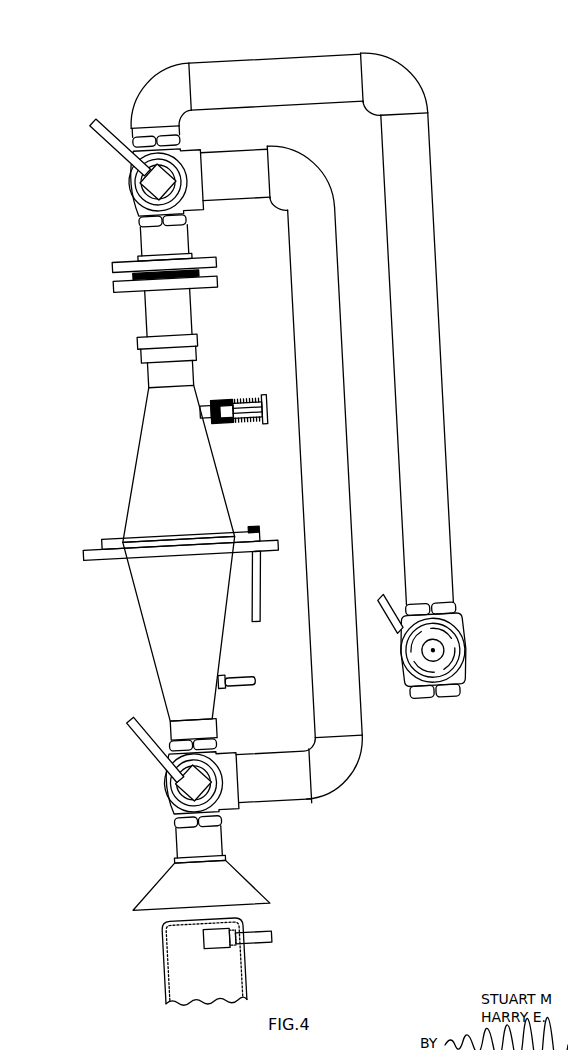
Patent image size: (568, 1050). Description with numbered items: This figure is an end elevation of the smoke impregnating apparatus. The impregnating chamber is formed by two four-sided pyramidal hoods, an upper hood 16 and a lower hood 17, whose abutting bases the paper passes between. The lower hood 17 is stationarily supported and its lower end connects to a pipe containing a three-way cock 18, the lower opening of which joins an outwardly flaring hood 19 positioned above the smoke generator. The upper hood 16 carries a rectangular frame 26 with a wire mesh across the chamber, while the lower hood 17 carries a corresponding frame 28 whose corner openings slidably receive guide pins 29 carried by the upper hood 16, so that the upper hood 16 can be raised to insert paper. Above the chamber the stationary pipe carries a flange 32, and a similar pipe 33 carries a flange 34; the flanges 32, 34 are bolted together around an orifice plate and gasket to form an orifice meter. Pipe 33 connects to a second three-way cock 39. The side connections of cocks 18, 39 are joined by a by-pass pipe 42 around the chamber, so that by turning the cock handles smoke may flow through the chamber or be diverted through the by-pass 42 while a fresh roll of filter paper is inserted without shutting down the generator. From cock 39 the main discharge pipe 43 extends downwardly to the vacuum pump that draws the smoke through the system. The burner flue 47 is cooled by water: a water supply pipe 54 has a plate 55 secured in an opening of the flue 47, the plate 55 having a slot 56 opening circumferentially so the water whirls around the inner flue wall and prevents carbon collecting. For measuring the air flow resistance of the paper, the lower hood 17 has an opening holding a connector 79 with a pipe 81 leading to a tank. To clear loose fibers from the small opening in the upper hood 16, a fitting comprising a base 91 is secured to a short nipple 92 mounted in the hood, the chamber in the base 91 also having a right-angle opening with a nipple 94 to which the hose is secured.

The upper hood 16 is at (133, 464).
The lower hood 17 is at (133, 639).
The three-way cock 18 is at (136, 790).
The outwardly flaring hood 19 is at (138, 882).
The rectangular frame 26 is at (99, 542).
The frame 28 is at (99, 552).
The guide pins 29 is at (235, 627).
The flange 32 is at (203, 286).
The pipe 33 is at (174, 243).
The flange 34 is at (126, 266).
The three-way cock 39 is at (133, 182).
The by-pass pipe 42 is at (312, 522).
The main discharge pipe 43 is at (253, 77).
The burner flue 47 is at (122, 941).
The water supply pipe 54 is at (218, 939).
The plate 55 is at (269, 947).
The slot 56 is at (162, 937).
The connector 79 is at (200, 690).
The pipe 81 is at (265, 694).
The base 91 is at (206, 406).
The nipple 92 is at (201, 425).
The nipple 94 is at (220, 427).